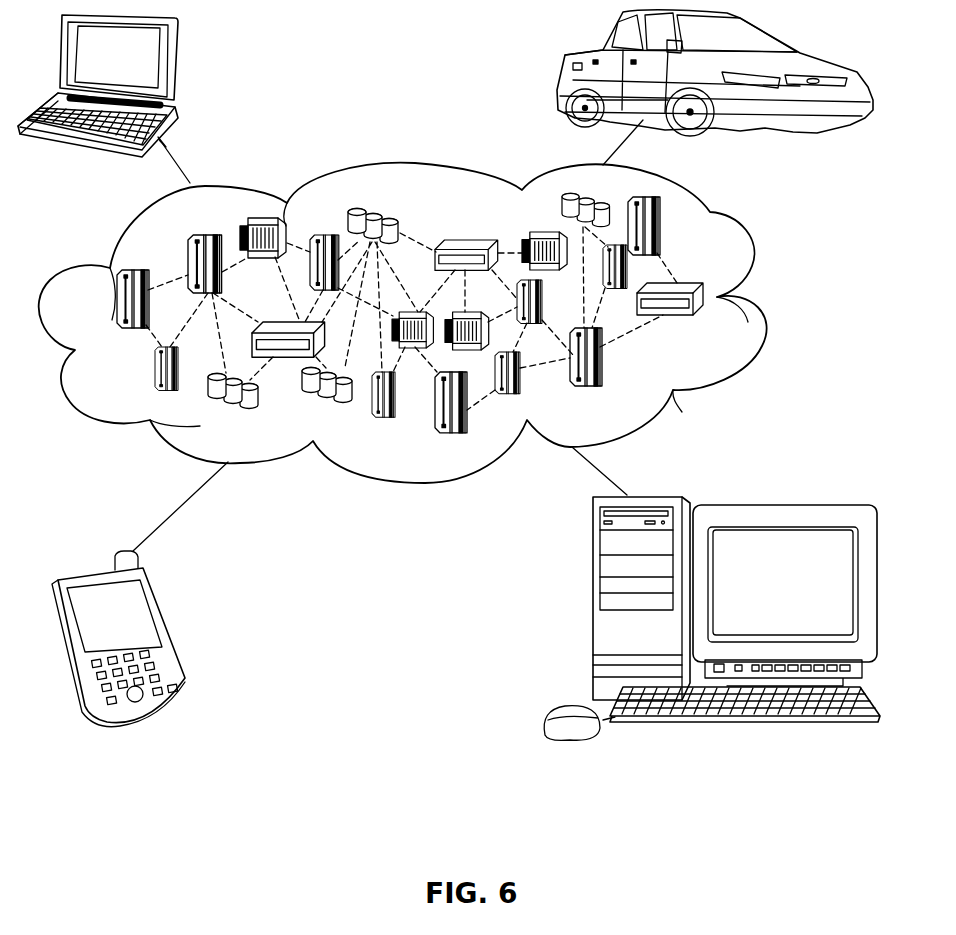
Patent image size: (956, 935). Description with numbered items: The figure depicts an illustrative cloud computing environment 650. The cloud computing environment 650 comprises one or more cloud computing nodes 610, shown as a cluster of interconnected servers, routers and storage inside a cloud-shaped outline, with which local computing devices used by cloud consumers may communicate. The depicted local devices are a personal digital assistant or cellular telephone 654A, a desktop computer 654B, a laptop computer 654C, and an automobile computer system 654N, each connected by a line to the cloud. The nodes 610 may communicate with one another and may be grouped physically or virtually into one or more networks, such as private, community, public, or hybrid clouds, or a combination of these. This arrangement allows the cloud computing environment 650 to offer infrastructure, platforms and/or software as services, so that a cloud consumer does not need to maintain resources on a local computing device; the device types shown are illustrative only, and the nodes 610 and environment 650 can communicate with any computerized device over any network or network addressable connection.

The personal digital assistant (PDA) or cellular telephone 654A is at (167, 625).
The desktop computer 654B is at (593, 605).
The laptop computer 654C is at (175, 62).
The automobile computer system 654N is at (566, 56).
The cloud computing environment 650 is at (745, 262).
The cloud computing nodes 610 is at (723, 320).